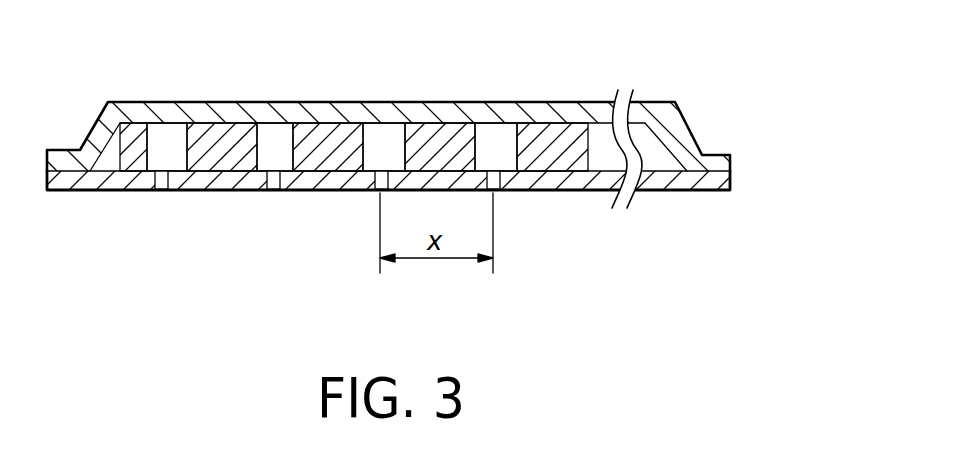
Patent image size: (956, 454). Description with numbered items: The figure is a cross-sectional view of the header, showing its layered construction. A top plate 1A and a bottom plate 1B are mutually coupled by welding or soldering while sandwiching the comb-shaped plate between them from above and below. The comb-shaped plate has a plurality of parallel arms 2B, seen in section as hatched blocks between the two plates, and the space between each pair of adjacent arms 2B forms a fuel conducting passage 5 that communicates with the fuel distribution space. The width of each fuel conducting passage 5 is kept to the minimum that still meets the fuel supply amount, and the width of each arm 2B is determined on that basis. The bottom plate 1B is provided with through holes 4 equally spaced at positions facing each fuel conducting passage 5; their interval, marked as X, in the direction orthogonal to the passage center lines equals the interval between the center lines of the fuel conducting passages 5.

The top plate 1A is at (127, 107).
The bottom plate 1B is at (95, 182).
The arm 2B is at (303, 125).
The through hole 4 is at (270, 187).
The fuel conducting passage 5 is at (490, 132).